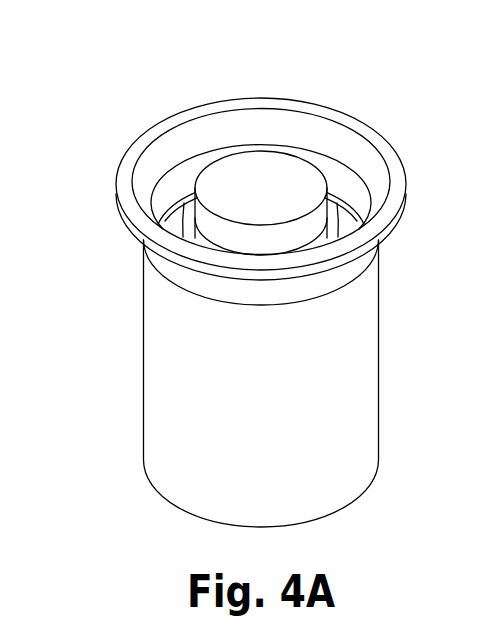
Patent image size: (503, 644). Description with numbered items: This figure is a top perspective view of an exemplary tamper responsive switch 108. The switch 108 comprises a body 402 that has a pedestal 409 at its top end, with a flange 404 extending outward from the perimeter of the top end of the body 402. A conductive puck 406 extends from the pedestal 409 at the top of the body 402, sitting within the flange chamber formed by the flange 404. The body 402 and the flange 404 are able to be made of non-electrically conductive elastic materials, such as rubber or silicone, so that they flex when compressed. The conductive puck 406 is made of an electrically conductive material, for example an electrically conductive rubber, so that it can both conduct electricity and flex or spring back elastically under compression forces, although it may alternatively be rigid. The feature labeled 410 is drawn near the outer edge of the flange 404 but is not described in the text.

The tamper responsive switch 108 is at (128, 55).
The body 402 is at (347, 356).
The flange 404 is at (150, 158).
The conductive puck 406 is at (253, 182).
The pedestal 409 is at (333, 215).
The outer lip 410 is at (383, 147).